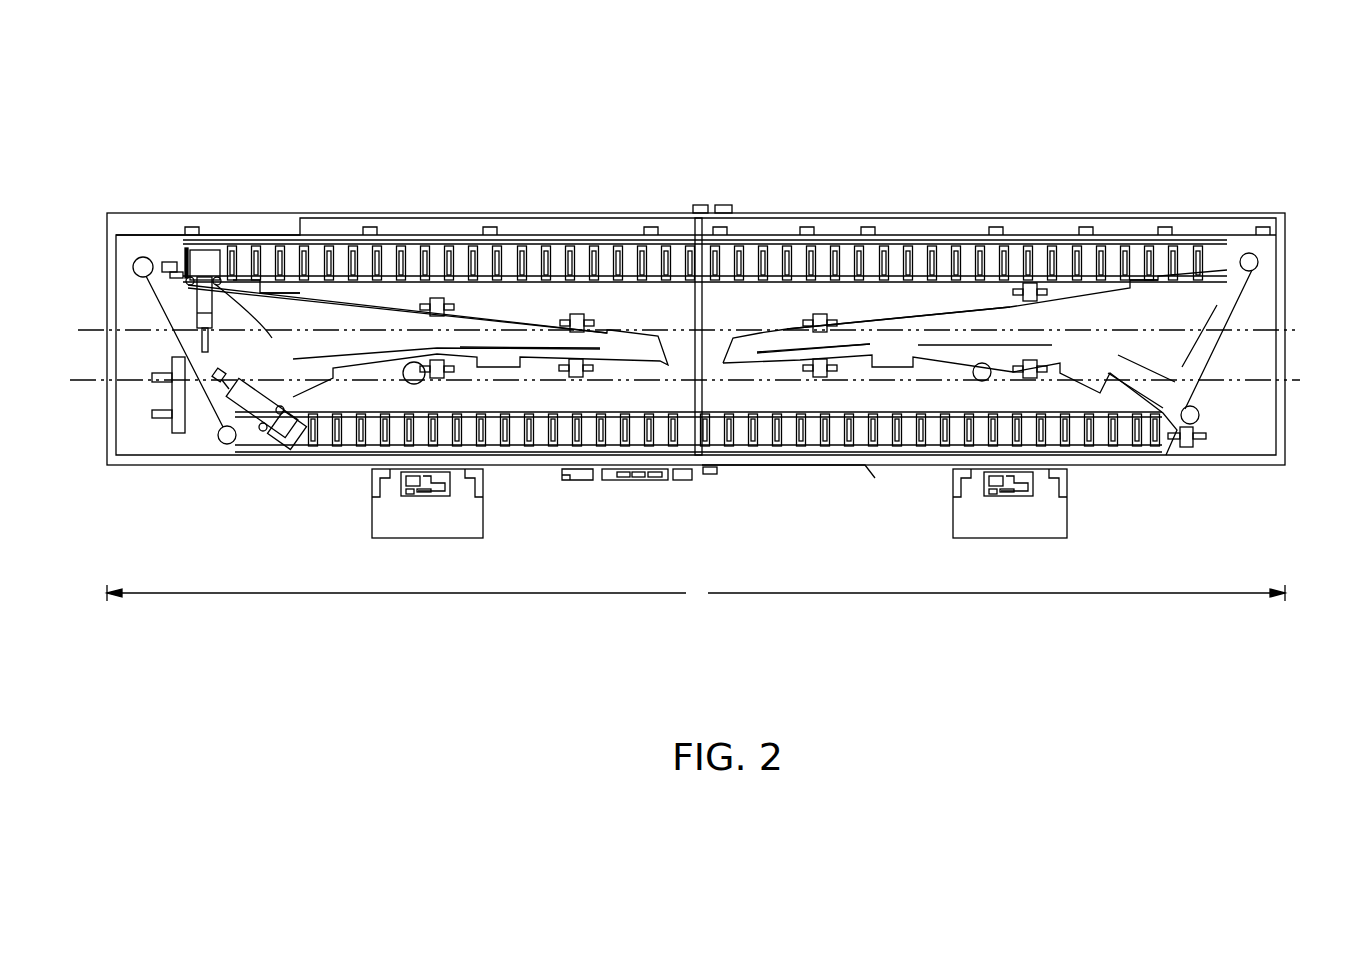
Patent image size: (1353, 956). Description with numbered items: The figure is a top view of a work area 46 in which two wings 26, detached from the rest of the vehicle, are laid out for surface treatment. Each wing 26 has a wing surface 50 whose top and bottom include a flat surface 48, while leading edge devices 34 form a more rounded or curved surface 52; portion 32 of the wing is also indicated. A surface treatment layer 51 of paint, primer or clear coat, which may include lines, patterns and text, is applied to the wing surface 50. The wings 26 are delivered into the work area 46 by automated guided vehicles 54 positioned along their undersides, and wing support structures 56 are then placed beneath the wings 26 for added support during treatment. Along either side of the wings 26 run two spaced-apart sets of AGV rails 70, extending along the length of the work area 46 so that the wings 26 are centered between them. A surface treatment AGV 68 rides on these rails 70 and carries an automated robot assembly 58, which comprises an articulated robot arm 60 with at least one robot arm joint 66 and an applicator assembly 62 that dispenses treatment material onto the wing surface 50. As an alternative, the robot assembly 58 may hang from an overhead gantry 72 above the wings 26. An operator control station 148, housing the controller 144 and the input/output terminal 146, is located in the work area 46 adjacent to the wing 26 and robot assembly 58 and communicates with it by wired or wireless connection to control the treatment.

The wing 26 is at (640, 345).
The wing lower section 32 is at (531, 352).
The leading edge device 34 is at (496, 322).
The work area 46 is at (163, 110).
The flat surface 48 is at (296, 308).
The wing surface 50 is at (319, 312).
The surface treatment layer 51 is at (1150, 365).
The curved surface 52 is at (268, 298).
The automated guided vehicle 54 is at (580, 322).
The wing support structure 56 is at (143, 256).
The automated robot assembly 58 is at (197, 250).
The robot arm 60 is at (200, 323).
The applicator assembly 62 is at (222, 370).
The robot arm joint 66 is at (280, 410).
The surface treatment AGV 68 is at (218, 262).
The AGV rail 70 is at (767, 255).
The overhead gantry 72 is at (85, 328).
The controller 144 is at (998, 480).
The input/output terminal 146 is at (1022, 487).
The operator control station 148 is at (395, 518).